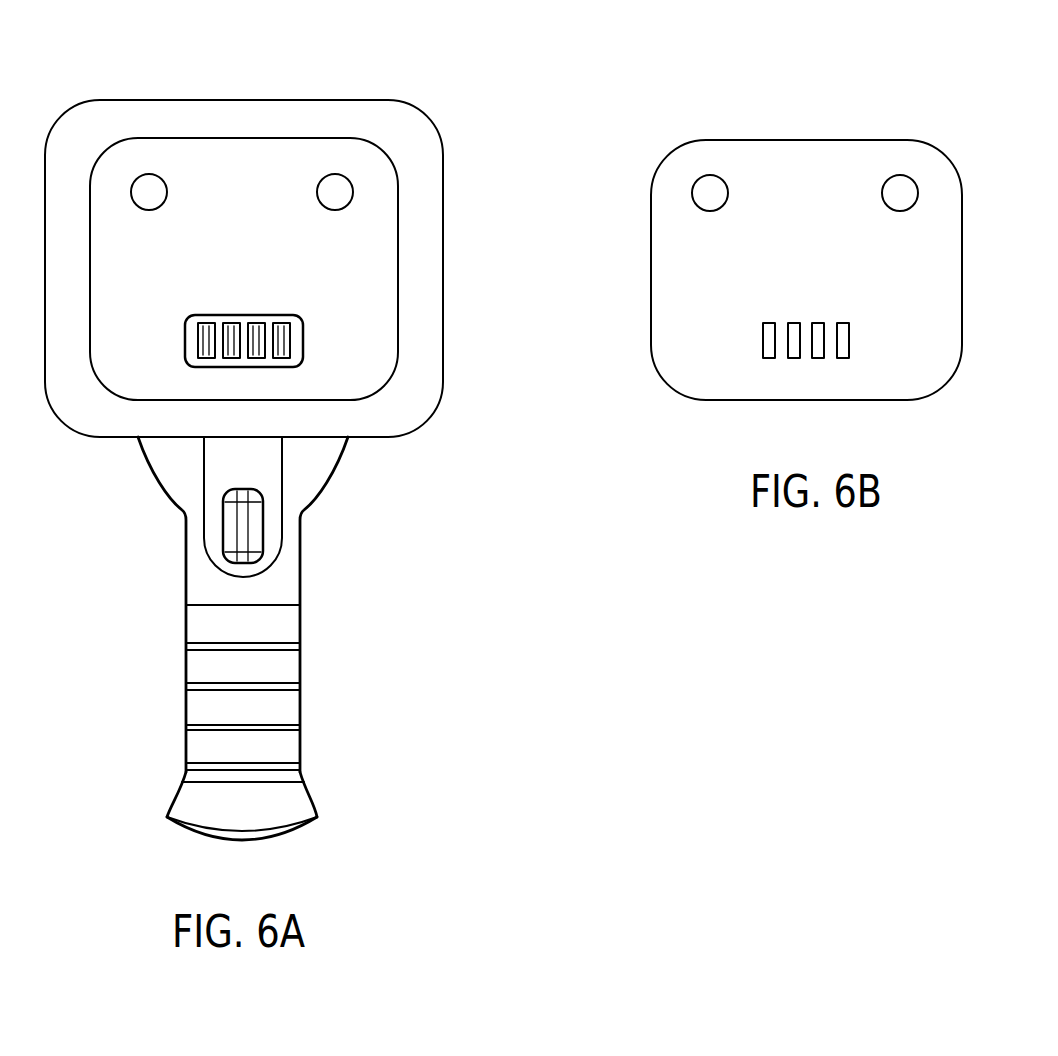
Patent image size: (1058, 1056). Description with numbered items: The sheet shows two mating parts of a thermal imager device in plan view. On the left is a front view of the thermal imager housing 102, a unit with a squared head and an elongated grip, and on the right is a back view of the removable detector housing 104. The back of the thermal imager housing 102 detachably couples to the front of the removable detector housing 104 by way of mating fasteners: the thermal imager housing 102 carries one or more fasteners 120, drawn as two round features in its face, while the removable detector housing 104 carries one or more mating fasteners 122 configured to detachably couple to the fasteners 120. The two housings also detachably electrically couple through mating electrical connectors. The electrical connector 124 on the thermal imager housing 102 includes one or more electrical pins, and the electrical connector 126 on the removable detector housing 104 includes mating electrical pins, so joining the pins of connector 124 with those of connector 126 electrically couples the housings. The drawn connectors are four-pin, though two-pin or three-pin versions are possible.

In FIG. 6A, the thermal imager housing 102 is at (320, 104).
In FIG. 6B, the removable detector housing 104 is at (745, 140).
In FIG. 6A, the fasteners 120 is at (333, 211).
In FIG. 6B, the mating fasteners 122 is at (898, 213).
In FIG. 6A, the electrical connector 124 is at (270, 315).
In FIG. 6B, the electrical connector 126 is at (802, 320).